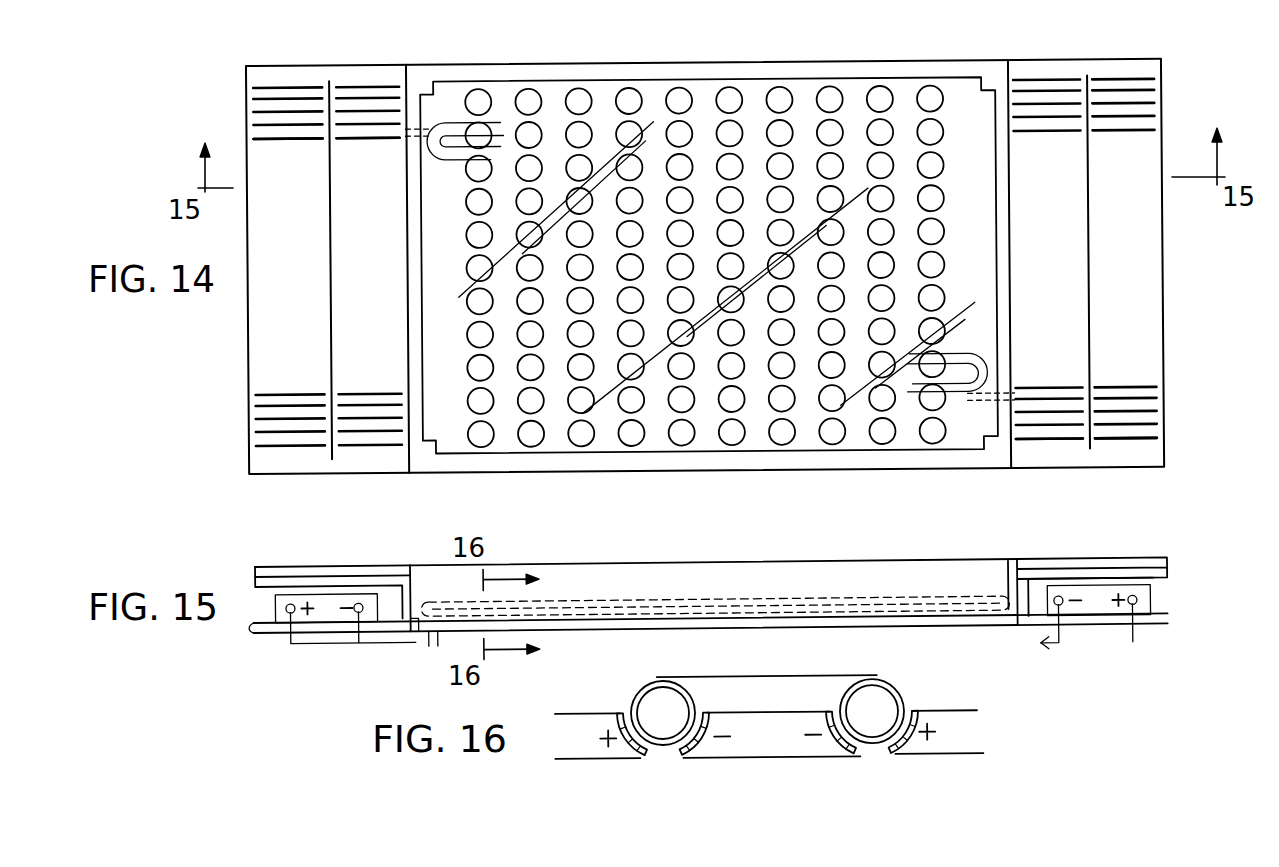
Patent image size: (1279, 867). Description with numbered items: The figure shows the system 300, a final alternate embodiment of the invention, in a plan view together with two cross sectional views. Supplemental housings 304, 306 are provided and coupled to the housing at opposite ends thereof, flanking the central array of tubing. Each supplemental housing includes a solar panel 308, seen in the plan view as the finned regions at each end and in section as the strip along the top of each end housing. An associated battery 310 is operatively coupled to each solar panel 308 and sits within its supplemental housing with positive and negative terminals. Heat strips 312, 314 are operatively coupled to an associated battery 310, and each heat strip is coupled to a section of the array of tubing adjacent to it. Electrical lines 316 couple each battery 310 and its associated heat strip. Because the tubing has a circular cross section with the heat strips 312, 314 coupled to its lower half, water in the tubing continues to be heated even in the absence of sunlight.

In FIG. 14, the system 300 is at (238, 362).
In FIG. 15, the system 300 is at (695, 553).
In FIG. 14, the supplemental housing 304 is at (246, 160).
In FIG. 15, the supplemental housing 304 is at (253, 582).
In FIG. 14, the supplemental housing 306 is at (1160, 141).
In FIG. 15, the supplemental housing 306 is at (1167, 572).
In FIG. 14, the solar panel 308 is at (364, 453).
In FIG. 15, the solar panel 308 is at (338, 567).
In FIG. 15, the battery 310 is at (252, 626).
In FIG. 16, the heat strip 312 is at (612, 722).
In FIG. 16, the heat strip 314 is at (810, 723).
In FIG. 14, the electrical lines 316 is at (978, 402).
In FIG. 15, the electrical lines 316 is at (348, 648).